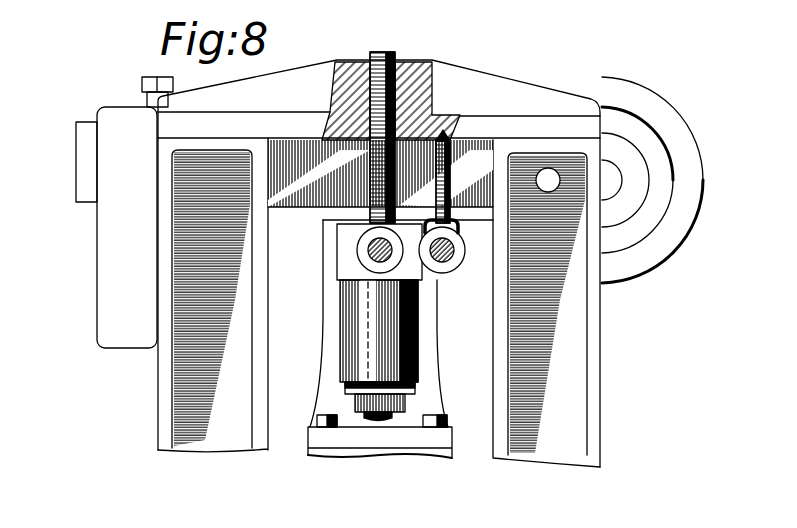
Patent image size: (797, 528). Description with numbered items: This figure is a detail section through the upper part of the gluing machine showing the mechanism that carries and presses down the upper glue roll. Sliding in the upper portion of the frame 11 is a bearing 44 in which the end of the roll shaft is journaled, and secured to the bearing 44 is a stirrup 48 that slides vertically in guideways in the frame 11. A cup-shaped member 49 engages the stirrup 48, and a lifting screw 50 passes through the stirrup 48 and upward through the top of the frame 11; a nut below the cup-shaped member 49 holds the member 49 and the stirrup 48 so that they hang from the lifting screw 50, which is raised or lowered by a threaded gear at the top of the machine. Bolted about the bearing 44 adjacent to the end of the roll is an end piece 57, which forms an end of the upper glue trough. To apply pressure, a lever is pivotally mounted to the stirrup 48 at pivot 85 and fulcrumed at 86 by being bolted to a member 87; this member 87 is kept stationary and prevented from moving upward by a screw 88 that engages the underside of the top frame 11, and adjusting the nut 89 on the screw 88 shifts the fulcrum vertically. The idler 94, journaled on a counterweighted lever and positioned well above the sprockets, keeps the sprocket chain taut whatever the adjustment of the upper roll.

The frame 11 is at (590, 388).
The idler 94 is at (627, 93).
The lifting screw 50 is at (396, 105).
The screw 88 is at (479, 143).
The pivot 85 is at (367, 256).
The member 87 is at (449, 258).
The fulcrum 86 is at (439, 263).
The nut 89 is at (457, 232).
The cup-shaped member 49 is at (395, 362).
The end piece 57 is at (382, 419).
The stirrup 48 is at (322, 392).
The bearing 44 is at (343, 453).